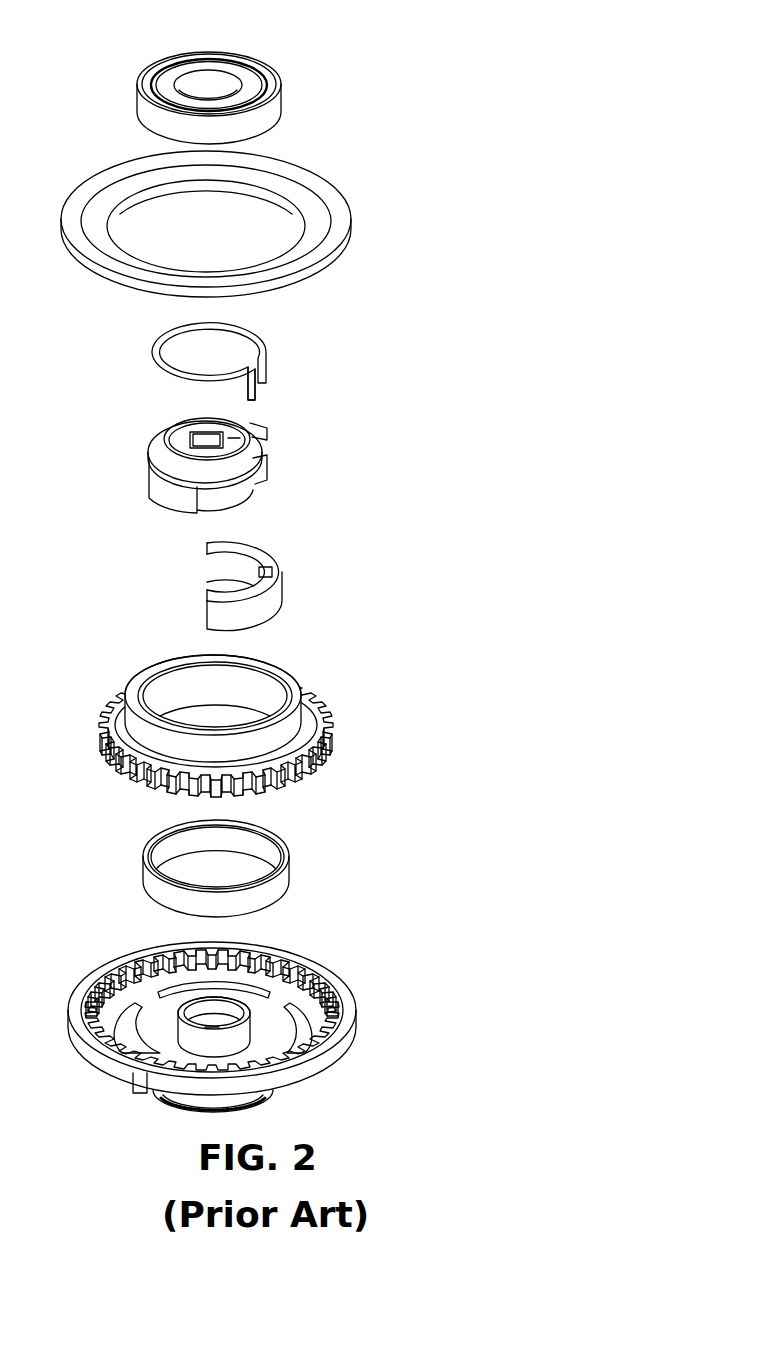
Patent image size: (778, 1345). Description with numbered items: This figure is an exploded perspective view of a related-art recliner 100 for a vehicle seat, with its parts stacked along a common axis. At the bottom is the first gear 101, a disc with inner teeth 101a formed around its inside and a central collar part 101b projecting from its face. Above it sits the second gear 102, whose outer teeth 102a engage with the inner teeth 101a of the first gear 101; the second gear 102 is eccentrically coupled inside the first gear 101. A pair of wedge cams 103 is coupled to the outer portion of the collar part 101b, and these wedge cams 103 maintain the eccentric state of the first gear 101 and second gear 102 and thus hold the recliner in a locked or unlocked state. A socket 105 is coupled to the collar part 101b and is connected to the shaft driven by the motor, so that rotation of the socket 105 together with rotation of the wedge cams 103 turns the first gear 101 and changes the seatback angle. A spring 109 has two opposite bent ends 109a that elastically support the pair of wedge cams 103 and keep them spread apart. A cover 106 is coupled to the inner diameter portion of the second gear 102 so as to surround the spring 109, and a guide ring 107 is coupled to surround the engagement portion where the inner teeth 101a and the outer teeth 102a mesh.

The recliner 100 is at (318, 28).
The cover 106 is at (278, 108).
The guide ring 107 is at (352, 232).
The spring 109 is at (152, 345).
The bent ends 109a is at (258, 393).
The socket 105 is at (155, 442).
The wedge cams 103 is at (276, 580).
The second gear 102 is at (277, 714).
The outer teeth 102a is at (333, 746).
The first gear 101 is at (254, 1001).
The inner teeth 101a is at (293, 975).
The collar part 101b is at (185, 1003).